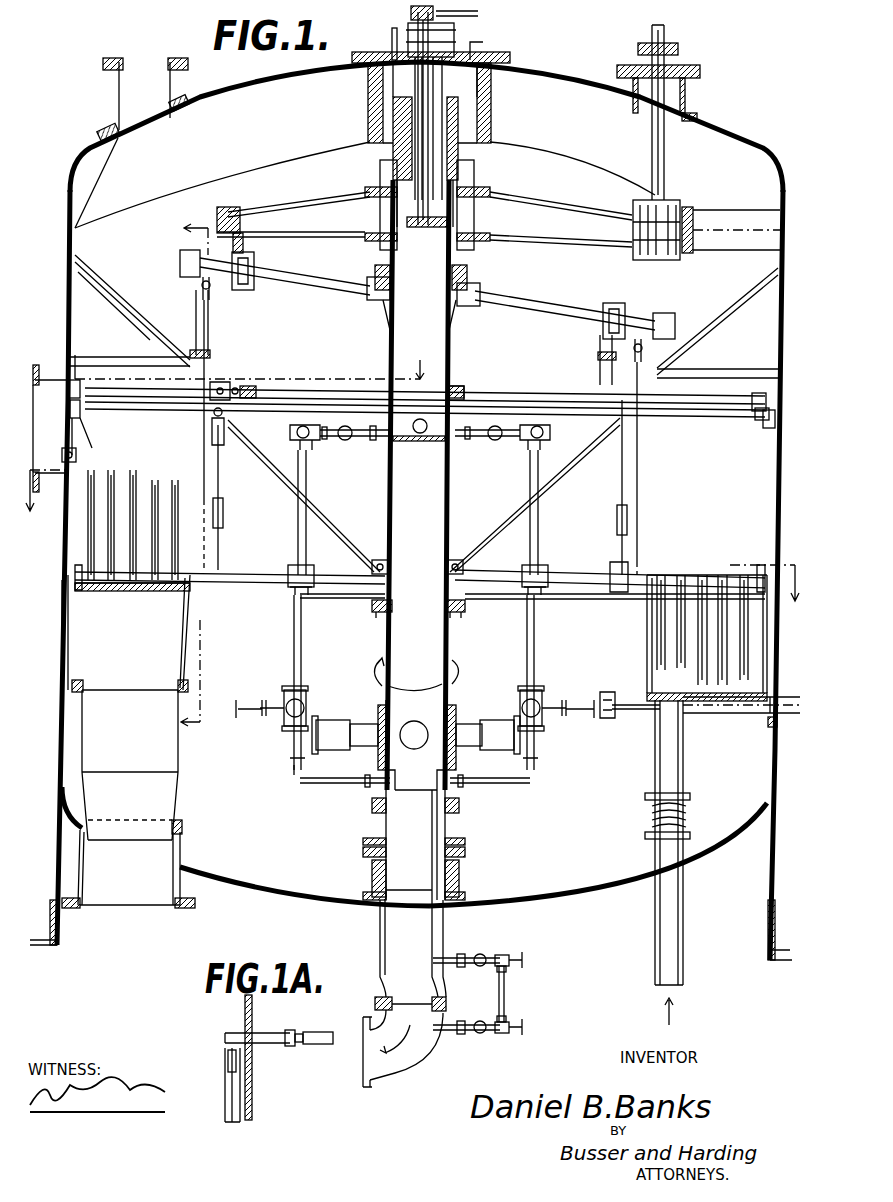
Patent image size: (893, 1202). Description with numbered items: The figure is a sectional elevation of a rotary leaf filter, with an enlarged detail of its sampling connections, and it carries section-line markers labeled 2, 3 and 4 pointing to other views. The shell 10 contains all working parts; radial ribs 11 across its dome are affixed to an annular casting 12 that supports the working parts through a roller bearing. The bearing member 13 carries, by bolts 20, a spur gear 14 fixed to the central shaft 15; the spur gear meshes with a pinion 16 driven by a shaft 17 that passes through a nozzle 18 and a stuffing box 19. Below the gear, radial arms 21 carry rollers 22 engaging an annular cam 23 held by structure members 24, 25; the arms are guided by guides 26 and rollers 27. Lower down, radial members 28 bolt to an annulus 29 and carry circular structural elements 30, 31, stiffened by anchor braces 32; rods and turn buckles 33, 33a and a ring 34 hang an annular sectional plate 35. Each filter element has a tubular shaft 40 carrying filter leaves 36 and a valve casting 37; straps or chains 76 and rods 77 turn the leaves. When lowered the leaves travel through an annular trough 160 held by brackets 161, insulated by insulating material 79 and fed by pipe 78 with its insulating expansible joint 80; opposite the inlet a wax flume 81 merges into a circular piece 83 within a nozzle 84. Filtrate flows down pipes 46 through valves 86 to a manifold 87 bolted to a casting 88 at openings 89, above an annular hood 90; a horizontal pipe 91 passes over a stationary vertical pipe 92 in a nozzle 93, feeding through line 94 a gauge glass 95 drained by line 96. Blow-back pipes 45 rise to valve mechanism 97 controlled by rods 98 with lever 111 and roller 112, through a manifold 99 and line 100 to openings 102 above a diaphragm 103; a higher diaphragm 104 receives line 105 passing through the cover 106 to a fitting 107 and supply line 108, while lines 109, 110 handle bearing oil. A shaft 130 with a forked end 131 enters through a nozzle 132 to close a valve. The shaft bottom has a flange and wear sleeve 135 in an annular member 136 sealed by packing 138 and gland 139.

In FIG. 1, the shell 10 is at (777, 472).
In FIG. 1, the radial ribs 11 is at (112, 162).
In FIG. 1, the annular casting 12 is at (492, 128).
In FIG. 1, the bearing member 13 is at (370, 128).
In FIG. 1, the spur gear 14 is at (325, 195).
In FIG. 1, the central shaft 15 is at (456, 362).
In FIG. 1A, the central shaft 15 is at (253, 1080).
In FIG. 1, the pinion 16 is at (636, 222).
In FIG. 1, the shaft 17 is at (651, 138).
In FIG. 1, the nozzle 18 is at (688, 98).
In FIG. 1, the stuffing box 19 is at (680, 58).
In FIG. 1, the bolts 20 is at (382, 218).
In FIG. 1, the radial arms 21 is at (315, 280).
In FIG. 1, the rollers 22 is at (183, 255).
In FIG. 1, the annular cam 23 is at (200, 290).
In FIG. 1, the structure members 24 is at (119, 357).
In FIG. 1, the structure members 25 is at (140, 328).
In FIG. 1, the guides 26 is at (240, 330).
In FIG. 1, the rollers 27 is at (255, 265).
In FIG. 1, the radial members 28 is at (328, 387).
In FIG. 1, the annulus 29 is at (470, 394).
In FIG. 1, the circular structural element 30 is at (72, 382).
In FIG. 1, the circular structural element 31 is at (216, 390).
In FIG. 1, the anchor braces 32 is at (512, 520).
In FIG. 1, the rods and turn buckles 33 is at (222, 526).
In FIG. 1, the rods and turn buckles 33a is at (222, 478).
In FIG. 1, the ring 34 is at (374, 614).
In FIG. 1, the annular sectional plate 35 is at (498, 602).
In FIG. 1, the filter leaves 36 is at (145, 482).
In FIG. 1, the casting 37 is at (314, 576).
In FIG. 1, the tubular shaft 40 is at (258, 572).
In FIG. 1, the pipes 45 is at (297, 530).
In FIG. 1, the pipes 46 is at (293, 635).
In FIG. 1, the straps or chains 76 is at (224, 505).
In FIG. 1, the rods 77 is at (203, 440).
In FIG. 1, the pipe 78 is at (684, 770).
In FIG. 1, the insulating material 79 is at (763, 693).
In FIG. 1, the insulating expansible joint 80 is at (688, 815).
In FIG. 1, the wax flume 81 is at (180, 748).
In FIG. 1, the circular piece 83 is at (172, 836).
In FIG. 1, the nozzle 84 is at (182, 860).
In FIG. 1, the valves 86 is at (287, 700).
In FIG. 1, the manifold 87 is at (338, 720).
In FIG. 1, the casting 88 is at (452, 712).
In FIG. 1, the openings 89 is at (416, 721).
In FIG. 1, the annular hood 90 is at (392, 773).
In FIG. 1, the horizontal pipe 91 is at (326, 784).
In FIG. 1A, the horizontal pipe 91 is at (272, 1033).
In FIG. 1, the stationary vertical pipe 92 is at (434, 832).
In FIG. 1A, the stationary vertical pipe 92 is at (226, 1080).
In FIG. 1, the nozzle 93 is at (380, 934).
In FIG. 1, the line 94 is at (445, 958).
In FIG. 1, the gauge glass 95 is at (505, 992).
In FIG. 1, the line 96 is at (450, 1032).
In FIG. 1, the valve mechanism 97 is at (292, 430).
In FIG. 1, the rods 98 is at (152, 405).
In FIG. 1, the manifold 99 is at (345, 440).
In FIG. 1, the line 100 is at (370, 436).
In FIG. 1, the openings 102 is at (400, 425).
In FIG. 1, the diaphragm 103 is at (414, 442).
In FIG. 1, the diaphragm 104 is at (420, 226).
In FIG. 1, the line 105 is at (445, 118).
In FIG. 1, the cover 106 is at (378, 54).
In FIG. 1, the fitting 107 is at (411, 12).
In FIG. 1, the line 108 is at (486, 22).
In FIG. 1, the line 109 is at (493, 45).
In FIG. 1, the line 110 is at (392, 36).
In FIG. 1, the lever 111 is at (772, 412).
In FIG. 1, the roller 112 is at (72, 402).
In FIG. 1, the shaft 130 is at (631, 712).
In FIG. 1, the forked end 131 is at (606, 691).
In FIG. 1, the nozzle 132 is at (780, 727).
In FIG. 1, the flange and wear sleeve 135 is at (376, 812).
In FIG. 1, the annular member 136 is at (372, 876).
In FIG. 1, the packing 138 is at (366, 852).
In FIG. 1, the gland 139 is at (364, 840).
In FIG. 1, the annular trough 160 is at (68, 625).
In FIG. 1, the brackets 161 is at (72, 694).
In FIG. 1, the section line 2 is at (413, 535).
In FIG. 1, the section line 3 is at (251, 359).
In FIG. 1, the section line 4 is at (194, 477).